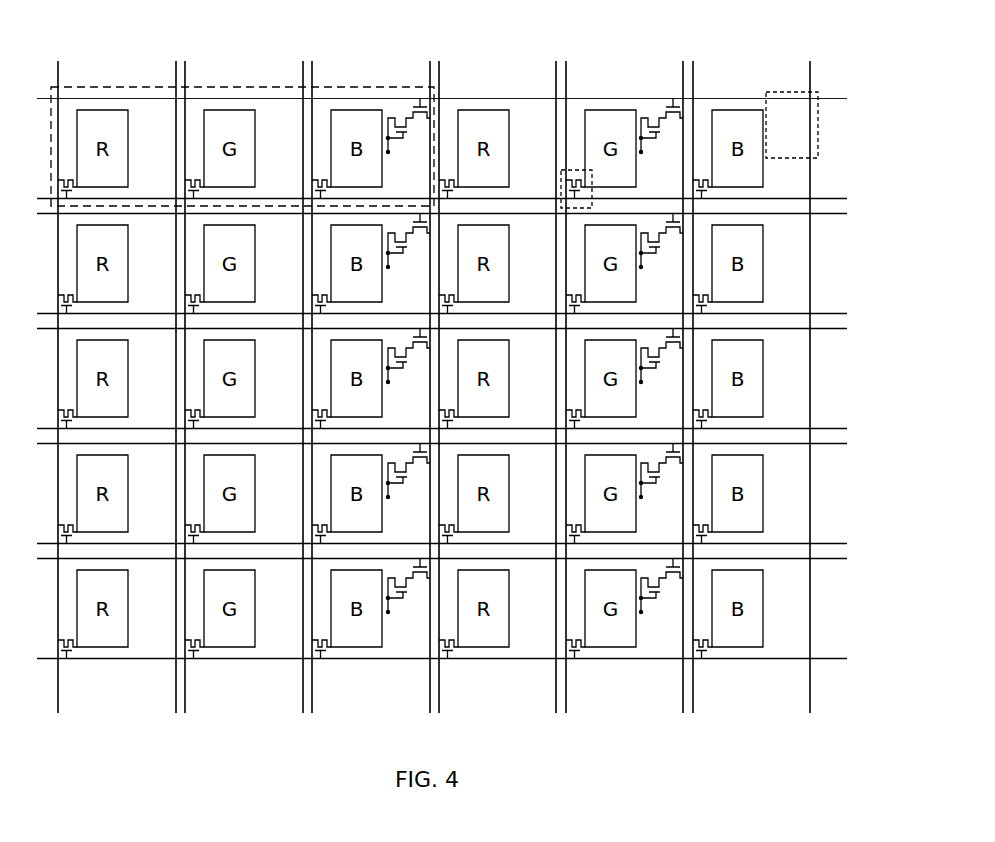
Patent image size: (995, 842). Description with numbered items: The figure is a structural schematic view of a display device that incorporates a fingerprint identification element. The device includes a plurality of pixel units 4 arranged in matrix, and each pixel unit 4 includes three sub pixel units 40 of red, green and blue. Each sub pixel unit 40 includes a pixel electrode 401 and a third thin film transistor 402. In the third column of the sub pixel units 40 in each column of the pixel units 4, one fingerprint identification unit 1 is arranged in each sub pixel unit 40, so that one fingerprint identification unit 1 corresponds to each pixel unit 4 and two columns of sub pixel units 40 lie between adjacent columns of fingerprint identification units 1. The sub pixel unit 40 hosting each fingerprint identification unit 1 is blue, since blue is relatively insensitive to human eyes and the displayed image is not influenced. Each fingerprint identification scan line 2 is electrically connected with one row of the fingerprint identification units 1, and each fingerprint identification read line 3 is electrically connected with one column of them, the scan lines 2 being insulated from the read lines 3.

The fingerprint identification unit 1 is at (795, 92).
The fingerprint identification scan line 2 is at (830, 99).
The fingerprint identification read line 3 is at (810, 62).
The pixel unit 4 is at (103, 86).
The sub pixel unit 40 is at (620, 112).
The pixel electrode 401 is at (622, 110).
The third thin film transistor 402 is at (572, 172).